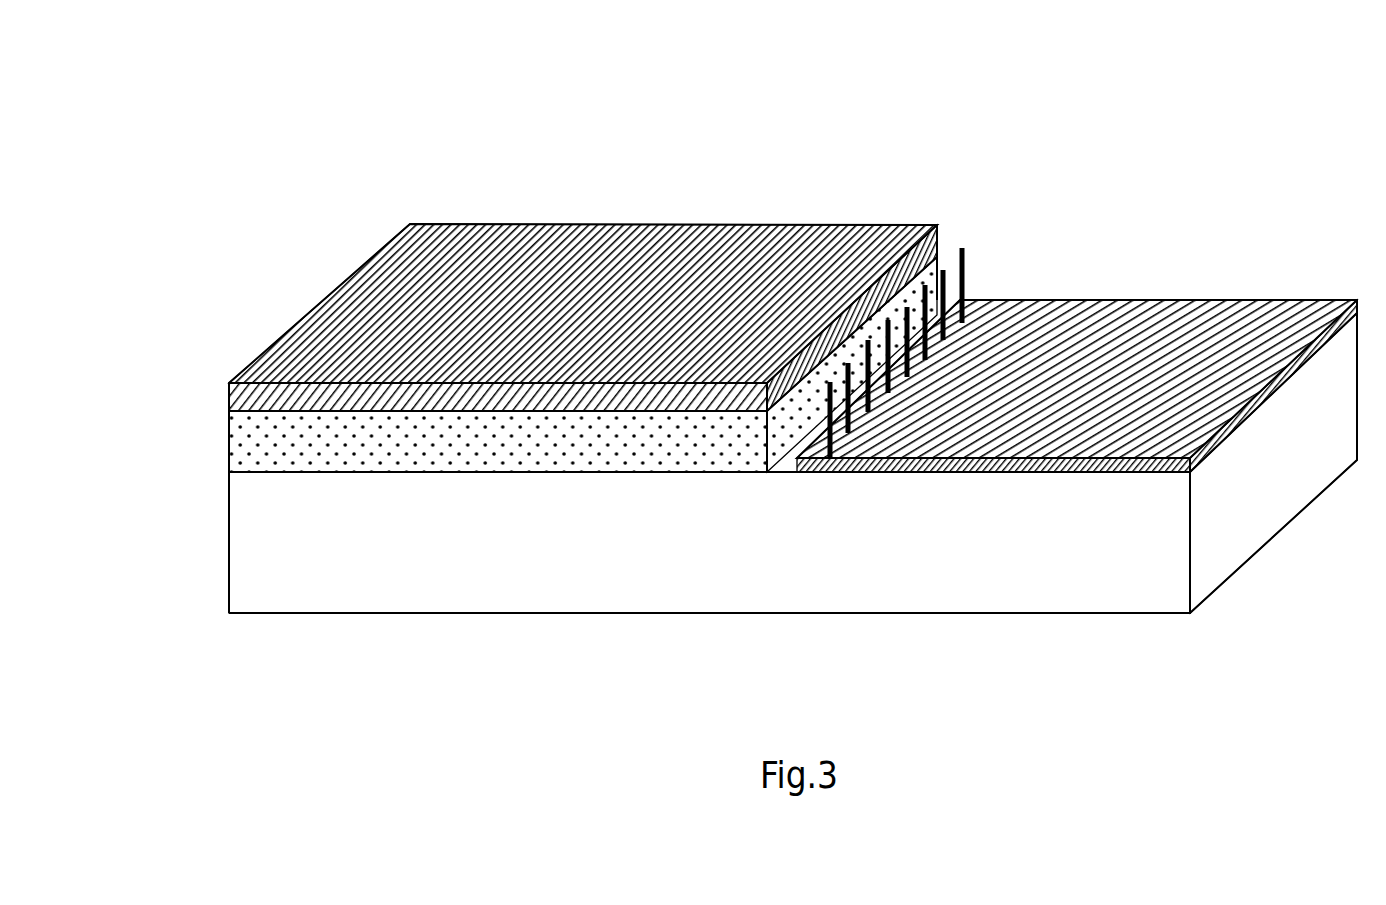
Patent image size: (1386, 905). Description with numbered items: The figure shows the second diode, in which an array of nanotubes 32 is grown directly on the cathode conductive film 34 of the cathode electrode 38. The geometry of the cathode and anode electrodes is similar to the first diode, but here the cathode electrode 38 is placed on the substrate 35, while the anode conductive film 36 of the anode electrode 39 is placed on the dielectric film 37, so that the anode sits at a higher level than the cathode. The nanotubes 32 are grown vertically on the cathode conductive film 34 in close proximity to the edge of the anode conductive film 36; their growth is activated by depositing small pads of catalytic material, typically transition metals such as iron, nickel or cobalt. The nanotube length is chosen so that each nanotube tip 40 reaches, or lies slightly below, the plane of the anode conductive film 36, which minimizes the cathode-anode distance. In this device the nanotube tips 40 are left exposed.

The nanotubes 32 is at (977, 260).
The cathode conductive film 34 is at (1068, 345).
The substrate 35 is at (590, 582).
The anode conductive film 36 is at (402, 292).
The dielectric film 37 is at (218, 436).
The cathode electrode 38 is at (1257, 248).
The anode electrode 39 is at (638, 190).
The nanotube tip 40 is at (961, 247).